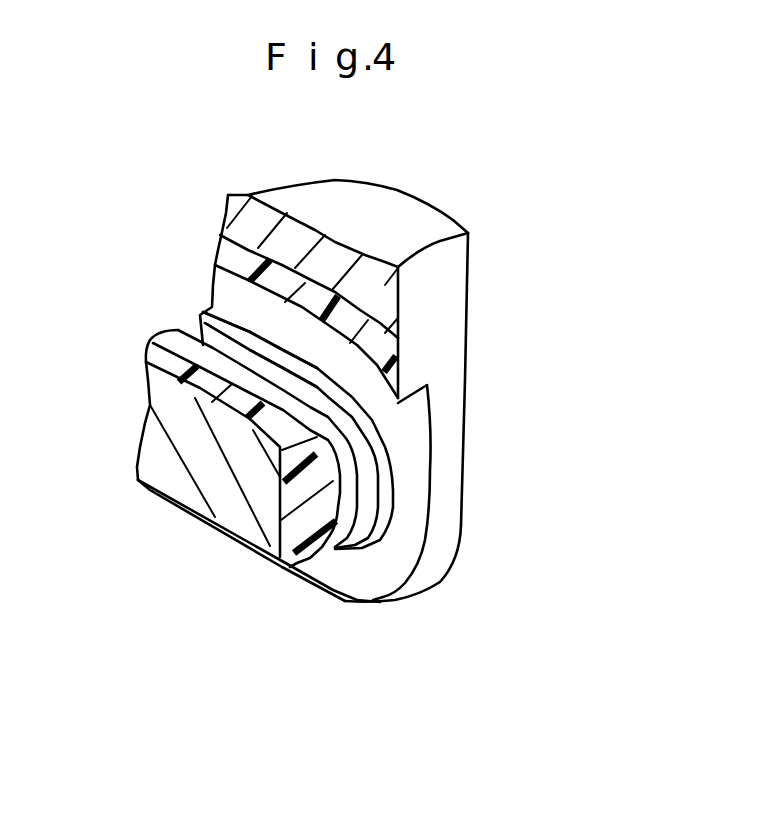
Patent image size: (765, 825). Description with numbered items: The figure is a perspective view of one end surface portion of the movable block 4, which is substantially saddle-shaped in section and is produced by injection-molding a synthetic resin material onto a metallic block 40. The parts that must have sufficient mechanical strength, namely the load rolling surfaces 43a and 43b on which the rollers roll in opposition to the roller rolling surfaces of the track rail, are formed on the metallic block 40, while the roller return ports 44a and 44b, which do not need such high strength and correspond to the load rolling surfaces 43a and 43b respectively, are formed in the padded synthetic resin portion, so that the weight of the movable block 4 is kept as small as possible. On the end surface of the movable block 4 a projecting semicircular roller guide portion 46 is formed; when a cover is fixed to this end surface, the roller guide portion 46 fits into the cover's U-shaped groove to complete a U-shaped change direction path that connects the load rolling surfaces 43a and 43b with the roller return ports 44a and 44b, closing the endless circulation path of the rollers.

The movable block 4 is at (415, 429).
The metallic block 40 is at (462, 288).
The load rolling surface 43a is at (362, 467).
The load rolling surface 43b is at (261, 355).
The roller return port 44a is at (392, 567).
The roller return port 44b is at (260, 340).
The roller guide portion 46 is at (443, 480).